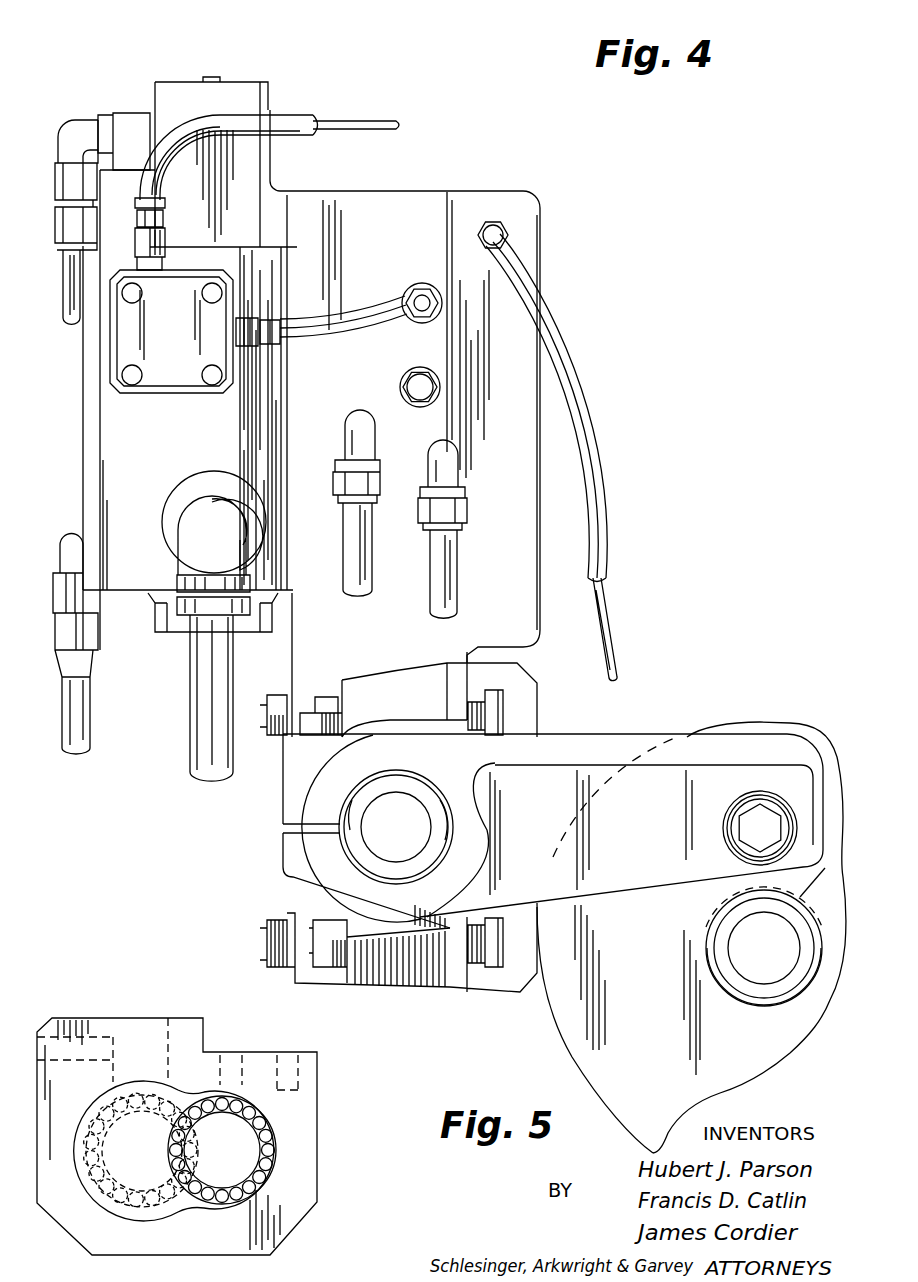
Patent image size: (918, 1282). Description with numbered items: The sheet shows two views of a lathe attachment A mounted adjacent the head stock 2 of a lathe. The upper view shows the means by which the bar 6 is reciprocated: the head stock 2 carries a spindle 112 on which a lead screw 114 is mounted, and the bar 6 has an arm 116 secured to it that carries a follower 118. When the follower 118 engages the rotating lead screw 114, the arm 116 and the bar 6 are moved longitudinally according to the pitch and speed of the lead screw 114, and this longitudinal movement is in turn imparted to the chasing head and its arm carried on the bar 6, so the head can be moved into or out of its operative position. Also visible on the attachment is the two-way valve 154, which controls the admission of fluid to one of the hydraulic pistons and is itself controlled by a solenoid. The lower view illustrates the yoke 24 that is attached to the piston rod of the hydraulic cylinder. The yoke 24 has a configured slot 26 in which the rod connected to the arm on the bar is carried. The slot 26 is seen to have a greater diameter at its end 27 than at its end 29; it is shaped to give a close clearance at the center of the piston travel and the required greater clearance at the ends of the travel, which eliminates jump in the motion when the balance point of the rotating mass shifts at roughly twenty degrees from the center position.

In FIG. 4, the head stock 2 is at (752, 691).
In FIG. 4, the bar 6 is at (374, 868).
In FIG. 4, the spindle 112 is at (778, 963).
In FIG. 4, the lead screw 114 is at (744, 1006).
In FIG. 4, the arm 116 is at (643, 752).
In FIG. 4, the follower 118 is at (707, 887).
In FIG. 4, the two-way valve 154 is at (180, 342).
In FIG. 4, the lathe attachment A is at (285, 53).
In FIG. 5, the yoke 24 is at (298, 1210).
In FIG. 5, the slot 26 is at (80, 1154).
In FIG. 5, the slot end 27 is at (94, 1214).
In FIG. 5, the slot end 29 is at (293, 1145).